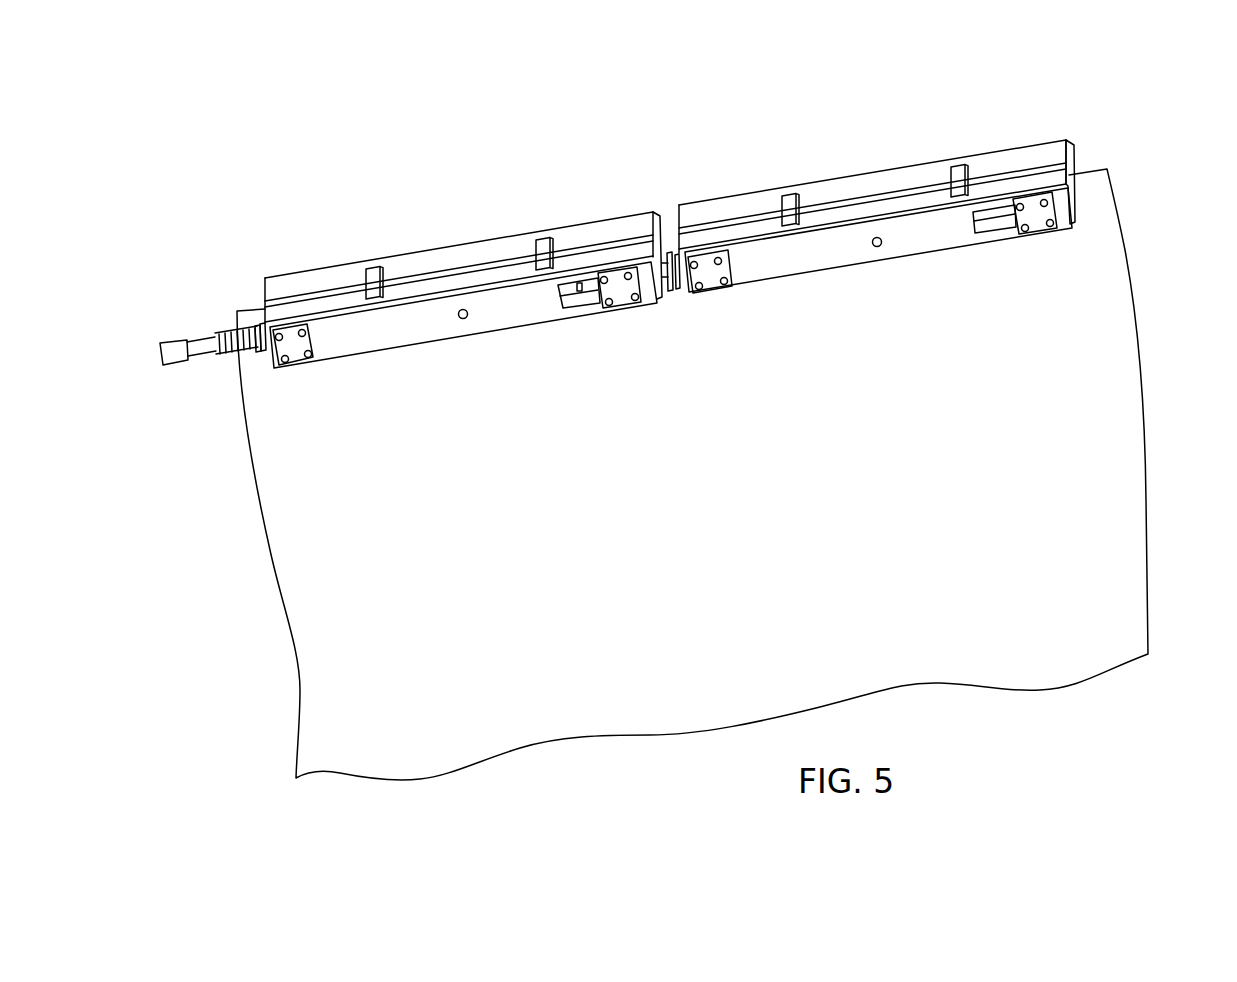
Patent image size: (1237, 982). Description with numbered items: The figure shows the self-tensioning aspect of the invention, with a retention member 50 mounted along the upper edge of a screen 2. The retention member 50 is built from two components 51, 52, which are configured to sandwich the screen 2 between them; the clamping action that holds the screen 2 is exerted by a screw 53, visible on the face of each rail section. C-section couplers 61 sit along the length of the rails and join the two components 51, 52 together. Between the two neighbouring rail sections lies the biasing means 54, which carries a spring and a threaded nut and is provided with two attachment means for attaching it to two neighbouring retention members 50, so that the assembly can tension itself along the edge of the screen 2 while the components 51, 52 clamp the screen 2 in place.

The sheet 2 is at (1097, 492).
The retention member 50 is at (461, 125).
The component 51 is at (1053, 140).
The component 52 is at (1073, 176).
The screw 53 is at (467, 319).
The biasing means 54 is at (680, 255).
The C-section coupler 61 is at (375, 268).